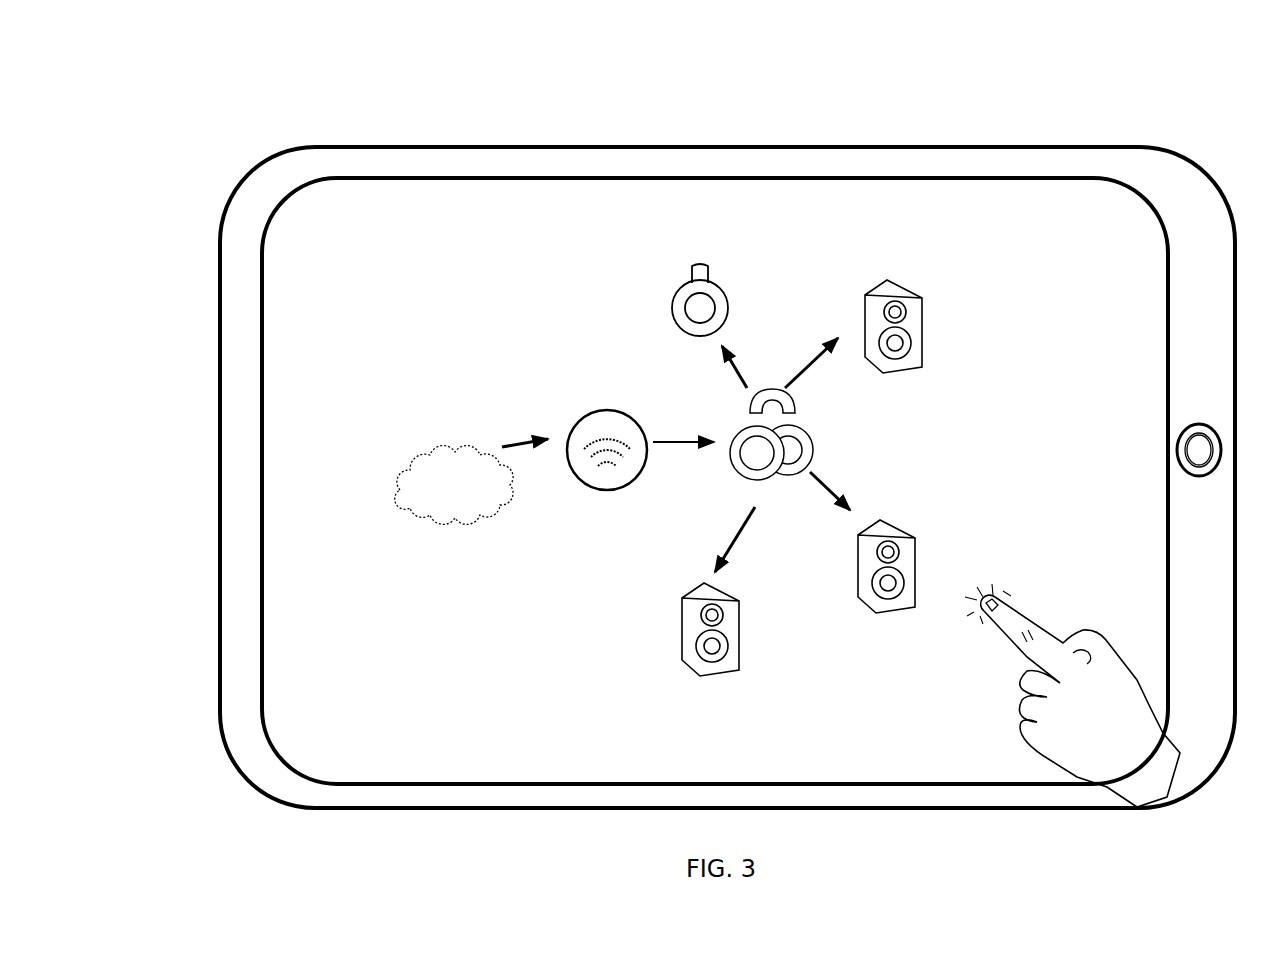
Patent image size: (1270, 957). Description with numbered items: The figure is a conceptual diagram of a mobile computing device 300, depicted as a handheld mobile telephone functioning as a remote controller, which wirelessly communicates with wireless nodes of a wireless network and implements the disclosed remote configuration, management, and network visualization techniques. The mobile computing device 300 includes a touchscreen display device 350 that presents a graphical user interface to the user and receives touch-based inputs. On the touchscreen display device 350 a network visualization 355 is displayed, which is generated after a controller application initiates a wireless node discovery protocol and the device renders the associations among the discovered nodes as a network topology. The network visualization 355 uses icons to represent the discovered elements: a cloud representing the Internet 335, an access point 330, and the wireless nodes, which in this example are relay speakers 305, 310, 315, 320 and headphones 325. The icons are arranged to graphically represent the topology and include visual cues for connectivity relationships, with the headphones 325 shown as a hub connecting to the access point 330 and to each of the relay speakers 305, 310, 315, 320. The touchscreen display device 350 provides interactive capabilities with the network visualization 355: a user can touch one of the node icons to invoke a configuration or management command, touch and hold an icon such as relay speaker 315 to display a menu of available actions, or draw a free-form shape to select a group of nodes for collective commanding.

The mobile computing device 300 is at (226, 80).
The relay speaker 305 is at (940, 288).
The relay speaker 310 is at (742, 292).
The relay speaker 315 is at (930, 542).
The relay speaker 320 is at (676, 589).
The headphones 325 is at (832, 461).
The access point 330 is at (582, 390).
The Internet 335 is at (435, 436).
The touchscreen display device 350 is at (1112, 147).
The network visualization 355 is at (430, 254).